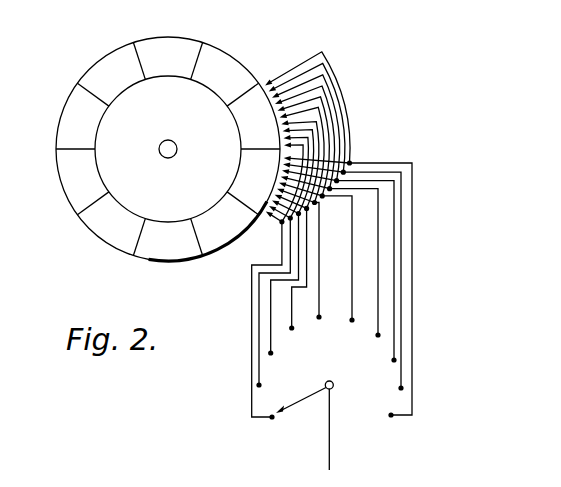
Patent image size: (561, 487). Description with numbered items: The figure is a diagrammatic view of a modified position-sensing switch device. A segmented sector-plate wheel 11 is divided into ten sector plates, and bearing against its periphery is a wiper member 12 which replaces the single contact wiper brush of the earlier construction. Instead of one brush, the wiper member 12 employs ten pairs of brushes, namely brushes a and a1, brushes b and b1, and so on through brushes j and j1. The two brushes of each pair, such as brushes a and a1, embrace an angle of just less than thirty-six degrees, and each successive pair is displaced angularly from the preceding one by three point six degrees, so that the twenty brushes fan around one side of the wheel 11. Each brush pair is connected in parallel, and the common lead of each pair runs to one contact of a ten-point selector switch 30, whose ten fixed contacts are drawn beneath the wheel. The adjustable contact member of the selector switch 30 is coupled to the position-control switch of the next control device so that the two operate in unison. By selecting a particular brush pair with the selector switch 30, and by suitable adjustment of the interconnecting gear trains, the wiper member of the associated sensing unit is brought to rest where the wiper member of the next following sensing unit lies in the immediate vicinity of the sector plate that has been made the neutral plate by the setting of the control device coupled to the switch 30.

The segmented commutator wheel 11 is at (210, 51).
The wiper member 12 is at (314, 236).
The ten-point selector switch 30 is at (322, 402).
The brush j1 is at (268, 87).
The brush b1 is at (278, 140).
The brush a1 is at (280, 152).
The brush j is at (279, 167).
The brush b is at (264, 204).
The brush a is at (258, 222).